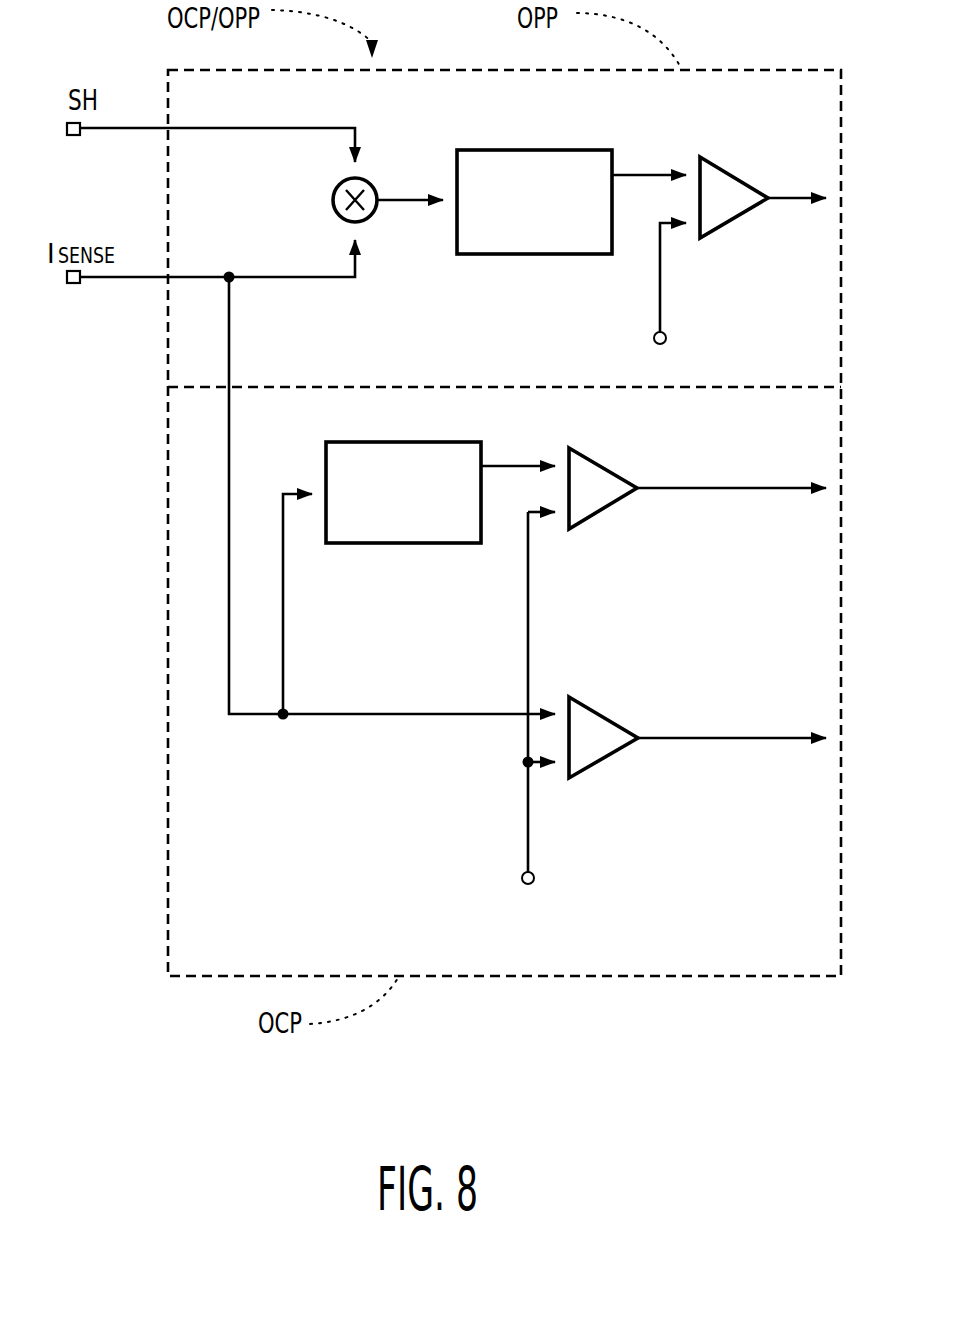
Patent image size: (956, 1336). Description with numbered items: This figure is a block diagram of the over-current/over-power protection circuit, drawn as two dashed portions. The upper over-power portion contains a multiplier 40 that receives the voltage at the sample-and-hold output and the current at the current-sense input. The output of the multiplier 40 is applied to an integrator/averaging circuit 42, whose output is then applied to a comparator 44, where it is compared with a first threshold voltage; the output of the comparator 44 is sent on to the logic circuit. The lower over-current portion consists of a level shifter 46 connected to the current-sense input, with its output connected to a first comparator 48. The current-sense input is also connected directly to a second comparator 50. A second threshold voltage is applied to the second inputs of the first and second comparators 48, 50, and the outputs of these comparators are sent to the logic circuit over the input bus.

The multiplier 40 is at (333, 203).
The integrator/averaging circuit 42 is at (498, 150).
The comparator 44 is at (713, 163).
The level shifter 46 is at (368, 442).
The first comparator 48 is at (583, 452).
The second comparator 50 is at (583, 702).